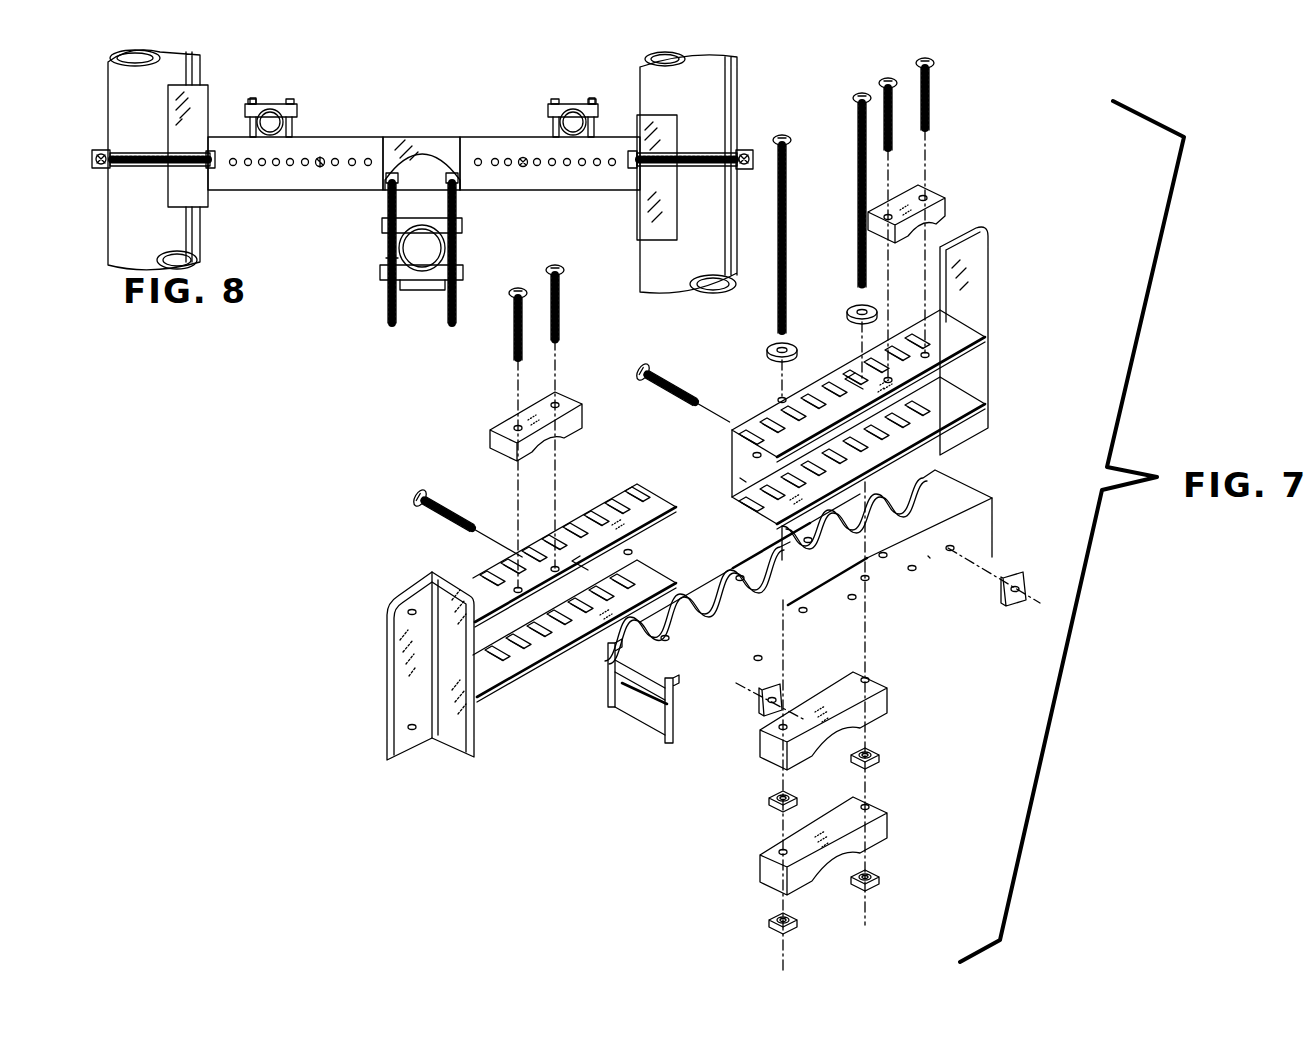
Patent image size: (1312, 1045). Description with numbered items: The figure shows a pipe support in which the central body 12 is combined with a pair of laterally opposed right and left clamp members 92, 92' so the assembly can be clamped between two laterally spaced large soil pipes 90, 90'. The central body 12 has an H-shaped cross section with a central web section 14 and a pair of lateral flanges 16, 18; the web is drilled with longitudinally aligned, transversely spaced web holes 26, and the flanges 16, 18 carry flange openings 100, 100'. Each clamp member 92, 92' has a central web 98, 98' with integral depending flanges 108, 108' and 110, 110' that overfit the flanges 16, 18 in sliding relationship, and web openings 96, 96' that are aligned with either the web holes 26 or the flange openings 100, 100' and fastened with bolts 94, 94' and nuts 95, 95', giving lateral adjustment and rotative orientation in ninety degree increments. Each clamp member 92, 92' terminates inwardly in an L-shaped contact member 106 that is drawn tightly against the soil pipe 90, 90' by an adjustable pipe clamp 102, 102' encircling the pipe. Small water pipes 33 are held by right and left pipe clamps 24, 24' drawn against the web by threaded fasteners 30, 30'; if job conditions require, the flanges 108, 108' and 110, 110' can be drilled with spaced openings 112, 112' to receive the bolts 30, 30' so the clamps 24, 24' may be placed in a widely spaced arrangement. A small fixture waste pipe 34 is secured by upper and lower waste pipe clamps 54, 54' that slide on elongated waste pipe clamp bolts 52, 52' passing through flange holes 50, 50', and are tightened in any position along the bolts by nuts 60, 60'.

In FIG. 8, the central body 12 is at (420, 137).
In FIG. 7, the central body 12 is at (928, 553).
In FIG. 7, the central web section 14 is at (618, 678).
In FIG. 7, the lateral flange 16 is at (673, 745).
In FIG. 7, the lateral flange 18 is at (628, 678).
In FIG. 8, the right pipe clamp 24 is at (573, 102).
In FIG. 7, the right pipe clamp 24 is at (937, 206).
In FIG. 8, the left pipe clamp 24' is at (288, 110).
In FIG. 7, the left pipe clamp 24' is at (557, 426).
In FIG. 7, the web holes 26 is at (653, 703).
In FIG. 8, the threaded fastener 30 is at (610, 116).
In FIG. 7, the threaded fastener 30 is at (756, 313).
In FIG. 8, the threaded fastener 30' is at (235, 113).
In FIG. 7, the threaded fastener 30' is at (683, 326).
In FIG. 8, the small pipe 33 is at (296, 122).
In FIG. 8, the waste pipe 34 is at (450, 250).
In FIG. 7, the flange hole 50 is at (886, 703).
In FIG. 7, the flange hole 50' is at (806, 785).
In FIG. 8, the waste pipe clamp bolt 52 is at (472, 266).
In FIG. 7, the waste pipe clamp bolt 52 is at (850, 235).
In FIG. 8, the waste pipe clamp bolt 52' is at (368, 268).
In FIG. 7, the waste pipe clamp bolt 52' is at (798, 267).
In FIG. 8, the waste pipe clamp 54 is at (422, 301).
In FIG. 7, the waste pipe clamp 54 is at (845, 846).
In FIG. 8, the waste pipe clamp 54' is at (444, 218).
In FIG. 7, the waste pipe clamp 54' is at (848, 721).
In FIG. 8, the nut 60 is at (440, 278).
In FIG. 7, the nut 60 is at (885, 824).
In FIG. 8, the nut 60' is at (369, 272).
In FIG. 7, the nut 60' is at (803, 876).
In FIG. 8, the soil pipe 90 is at (708, 172).
In FIG. 8, the soil pipe 90' is at (125, 160).
In FIG. 8, the right clamp member 92 is at (550, 182).
In FIG. 7, the right clamp member 92 is at (904, 419).
In FIG. 8, the left clamp member 92' is at (295, 182).
In FIG. 7, the left clamp member 92' is at (394, 666).
In FIG. 8, the bolt 94 is at (498, 122).
In FIG. 7, the bolt 94 is at (684, 375).
In FIG. 8, the bolt 94' is at (302, 213).
In FIG. 7, the bolt 94' is at (431, 522).
In FIG. 7, the nut 95 is at (1003, 558).
In FIG. 7, the nut 95' is at (747, 724).
In FIG. 8, the web opening 96 is at (545, 193).
In FIG. 7, the web opening 96 is at (813, 428).
In FIG. 8, the web opening 96' is at (301, 191).
In FIG. 7, the web opening 96' is at (603, 560).
In FIG. 7, the central web 98 is at (728, 512).
In FIG. 7, the central web 98' is at (560, 626).
In FIG. 7, the flange opening 100 is at (912, 522).
In FIG. 7, the flange opening 100' is at (730, 603).
In FIG. 8, the adjustable pipe clamp 102 is at (716, 171).
In FIG. 8, the adjustable pipe clamp 102' is at (131, 146).
In FIG. 7, the L-shaped contact member 106 is at (973, 280).
In FIG. 7, the depending flange 108 is at (888, 387).
In FIG. 7, the depending flange 108' is at (585, 538).
In FIG. 7, the depending flange 110 is at (864, 456).
In FIG. 7, the depending flange 110' is at (574, 638).
In FIG. 7, the spaced opening 112 is at (941, 349).
In FIG. 7, the spaced opening 112' is at (586, 512).